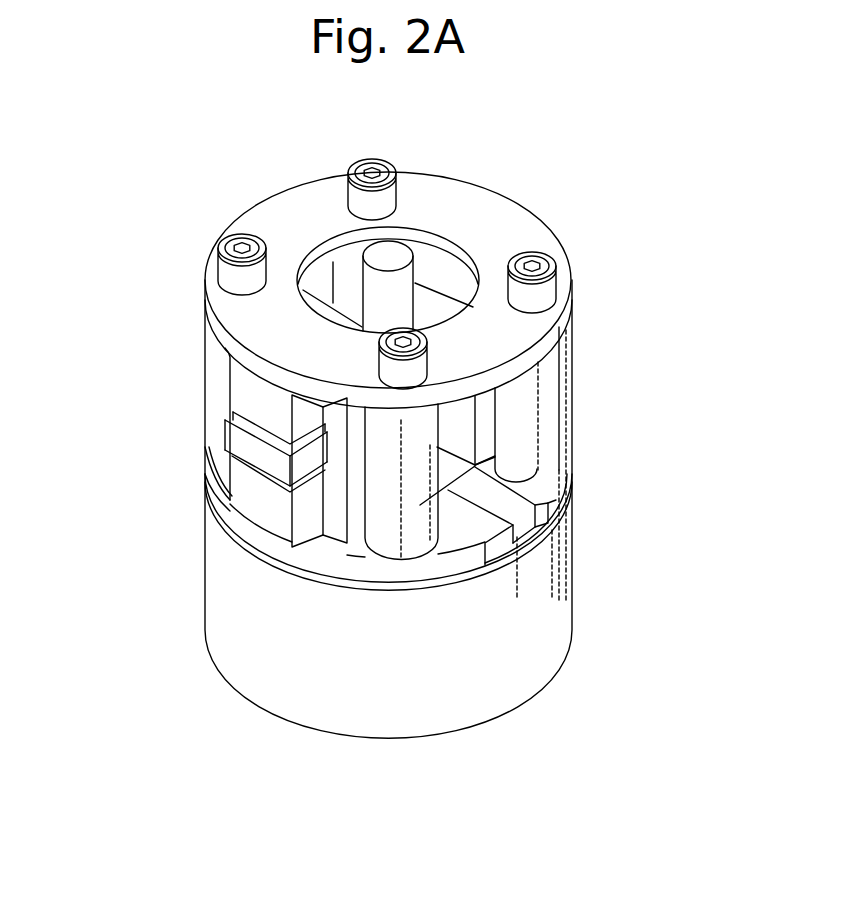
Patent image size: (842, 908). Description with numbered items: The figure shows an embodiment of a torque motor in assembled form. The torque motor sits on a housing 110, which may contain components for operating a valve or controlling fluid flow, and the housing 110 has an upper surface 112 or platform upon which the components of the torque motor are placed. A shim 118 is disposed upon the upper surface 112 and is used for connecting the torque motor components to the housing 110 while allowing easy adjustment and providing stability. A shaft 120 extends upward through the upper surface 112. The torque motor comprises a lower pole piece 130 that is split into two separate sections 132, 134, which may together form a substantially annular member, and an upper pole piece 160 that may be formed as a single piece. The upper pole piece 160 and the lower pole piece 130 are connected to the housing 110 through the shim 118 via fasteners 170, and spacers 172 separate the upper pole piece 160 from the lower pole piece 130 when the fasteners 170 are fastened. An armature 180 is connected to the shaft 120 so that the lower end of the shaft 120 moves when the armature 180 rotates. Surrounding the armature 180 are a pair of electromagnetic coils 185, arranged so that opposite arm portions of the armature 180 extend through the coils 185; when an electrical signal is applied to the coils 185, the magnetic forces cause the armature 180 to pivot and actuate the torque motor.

The housing 110 is at (242, 607).
The upper surface 112 is at (450, 478).
The shim 118 is at (510, 562).
The shaft 120 is at (400, 257).
The lower pole piece 130 is at (255, 490).
The first section of lower pole piece 132 is at (250, 515).
The second section of lower pole piece 134 is at (550, 508).
The upper pole piece 160 is at (487, 237).
The fasteners 170 is at (347, 194).
The spacers 172 is at (550, 452).
The armature 180 is at (245, 440).
The electromagnetic coils 185 is at (468, 413).